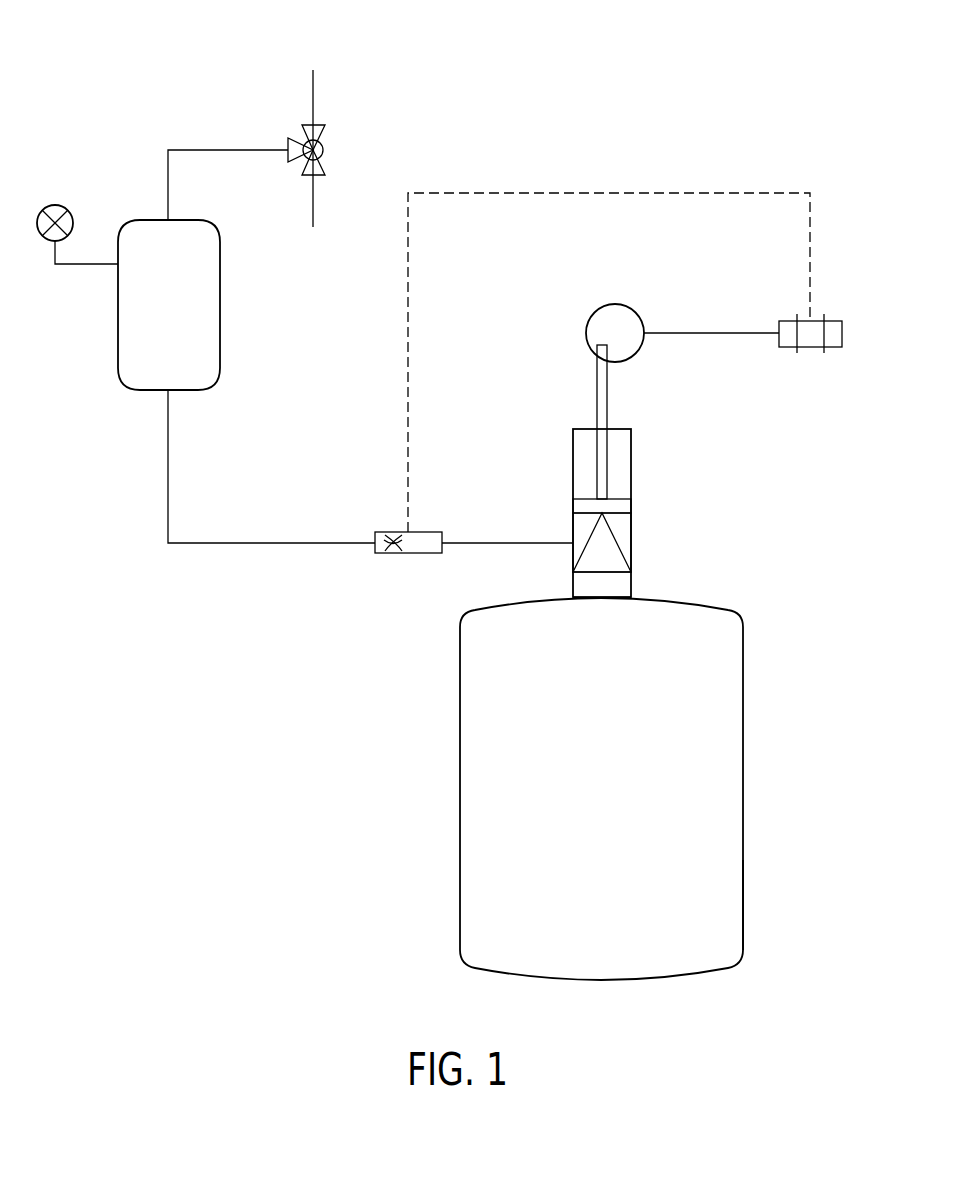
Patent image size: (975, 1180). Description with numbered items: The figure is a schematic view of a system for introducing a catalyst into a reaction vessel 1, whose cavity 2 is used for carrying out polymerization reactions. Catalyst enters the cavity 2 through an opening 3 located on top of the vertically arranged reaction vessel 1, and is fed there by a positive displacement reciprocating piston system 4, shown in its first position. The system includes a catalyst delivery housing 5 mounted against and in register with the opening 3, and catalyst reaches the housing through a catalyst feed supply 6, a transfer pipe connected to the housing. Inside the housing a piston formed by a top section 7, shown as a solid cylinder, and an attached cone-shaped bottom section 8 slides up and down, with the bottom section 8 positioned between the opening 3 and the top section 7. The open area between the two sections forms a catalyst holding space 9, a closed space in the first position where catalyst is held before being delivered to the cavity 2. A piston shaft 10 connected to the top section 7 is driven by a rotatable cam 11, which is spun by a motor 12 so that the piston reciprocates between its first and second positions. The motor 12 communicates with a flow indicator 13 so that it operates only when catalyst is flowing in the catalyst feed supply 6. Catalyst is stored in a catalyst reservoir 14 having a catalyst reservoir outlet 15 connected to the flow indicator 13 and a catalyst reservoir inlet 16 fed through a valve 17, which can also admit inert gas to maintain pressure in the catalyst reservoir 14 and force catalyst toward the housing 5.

The reaction vessel 1 is at (743, 785).
The cavity 2 is at (733, 887).
The opening 3 is at (610, 651).
The positive displacement reciprocating piston system 4 is at (642, 471).
The catalyst delivery housing 5 is at (631, 462).
The catalyst feed supply 6 is at (495, 543).
The top section 7 is at (631, 508).
The bottom section 8 is at (621, 549).
The catalyst holding space 9 is at (576, 529).
The piston shaft 10 is at (607, 400).
The rotatable cam 11 is at (613, 305).
The motor 12 is at (842, 333).
The flow indicator 13 is at (405, 553).
The catalyst reservoir 14 is at (220, 312).
The catalyst reservoir outlet 15 is at (295, 543).
The catalyst reservoir inlet 16 is at (224, 150).
The valve 17 is at (325, 148).